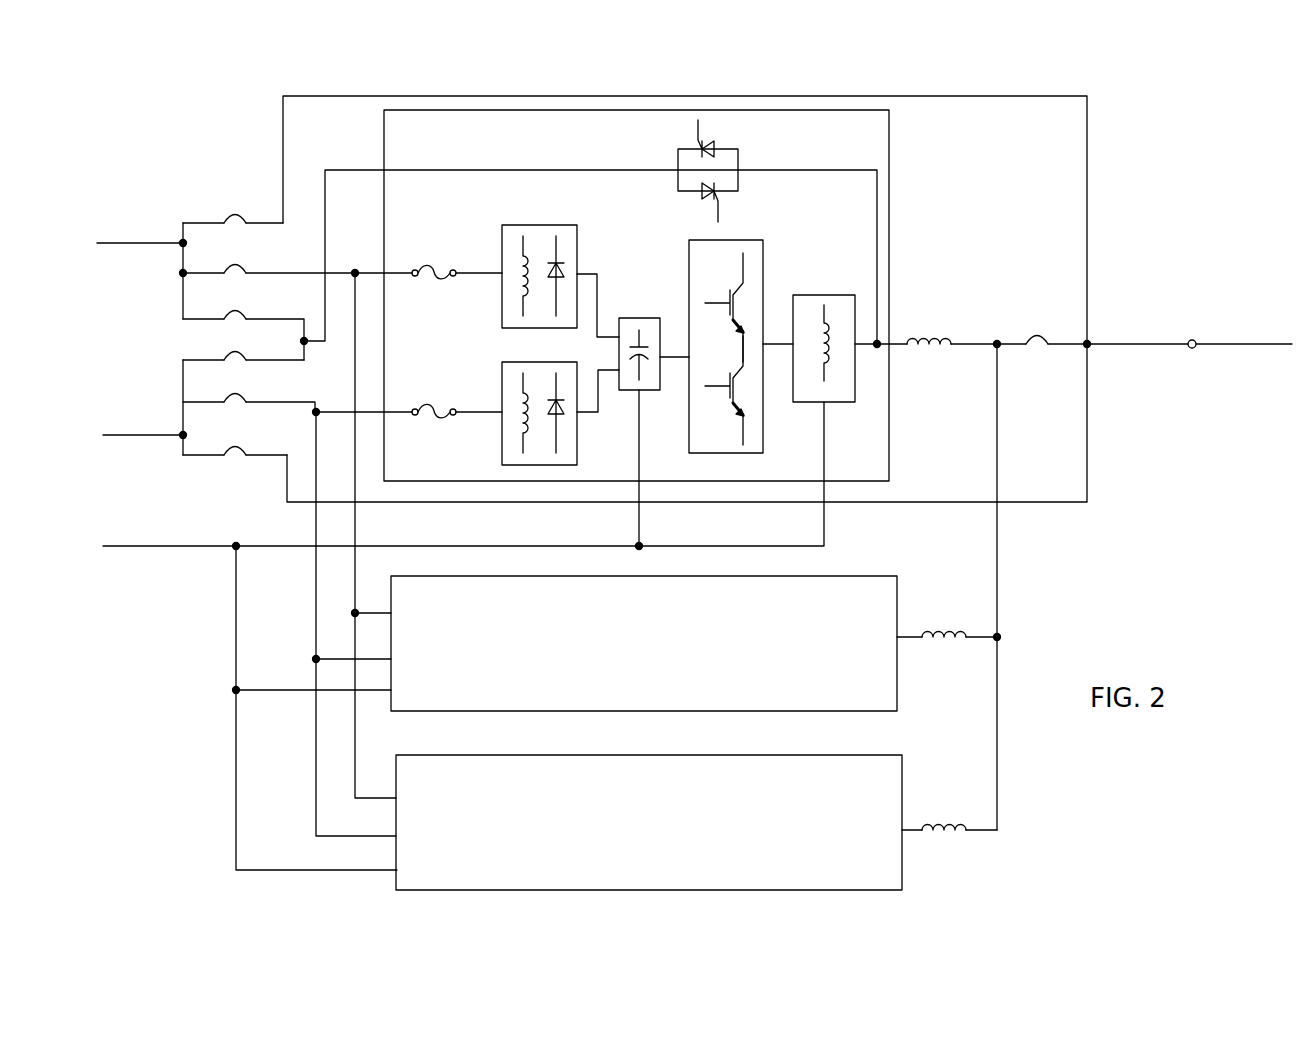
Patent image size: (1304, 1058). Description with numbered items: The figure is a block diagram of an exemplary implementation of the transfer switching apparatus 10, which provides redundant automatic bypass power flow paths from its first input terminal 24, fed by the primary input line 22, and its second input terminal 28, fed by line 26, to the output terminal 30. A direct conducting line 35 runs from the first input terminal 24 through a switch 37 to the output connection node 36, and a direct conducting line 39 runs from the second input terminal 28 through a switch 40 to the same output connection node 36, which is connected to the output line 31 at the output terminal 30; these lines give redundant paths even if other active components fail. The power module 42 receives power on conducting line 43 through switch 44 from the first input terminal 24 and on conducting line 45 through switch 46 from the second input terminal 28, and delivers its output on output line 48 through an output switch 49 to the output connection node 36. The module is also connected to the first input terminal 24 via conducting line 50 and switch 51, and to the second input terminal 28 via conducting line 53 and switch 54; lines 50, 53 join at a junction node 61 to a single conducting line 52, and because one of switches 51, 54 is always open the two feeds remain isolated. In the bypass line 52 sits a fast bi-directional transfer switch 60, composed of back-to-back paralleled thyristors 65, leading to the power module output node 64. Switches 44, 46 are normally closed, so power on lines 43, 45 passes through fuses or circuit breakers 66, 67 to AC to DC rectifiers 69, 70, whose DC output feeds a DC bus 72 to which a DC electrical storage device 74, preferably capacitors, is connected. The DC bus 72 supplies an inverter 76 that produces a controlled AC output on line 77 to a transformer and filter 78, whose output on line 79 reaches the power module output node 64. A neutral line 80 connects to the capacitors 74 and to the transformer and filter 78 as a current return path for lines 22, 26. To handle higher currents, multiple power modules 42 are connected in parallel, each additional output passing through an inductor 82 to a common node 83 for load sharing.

The transfer switching apparatus 10 is at (1148, 210).
The primary input line 22 is at (143, 240).
The first input terminal 24 is at (177, 262).
The second input line 26 is at (143, 432).
The second input terminal 28 is at (182, 445).
The output terminal 30 is at (1191, 340).
The output line 31 is at (1265, 343).
The direct conducting line 35 is at (373, 95).
The output connection node 36 is at (1089, 347).
The switch 37 is at (238, 212).
The direct conducting line 39 is at (497, 502).
The switch 40 is at (236, 463).
The power module 42 is at (889, 143).
The conducting line 43 is at (272, 270).
The switch 44 is at (232, 267).
The conducting line 45 is at (313, 465).
The switch 46 is at (234, 395).
The output line 48 is at (1003, 347).
The output switch 49 is at (1034, 340).
The conducting line 50 is at (266, 320).
The switch 51 is at (235, 312).
The conducting line 52 is at (361, 168).
The conducting line 53 is at (257, 362).
The switch 54 is at (232, 352).
The fast bi-directional transfer switch 60 is at (678, 158).
The junction node 61 is at (306, 344).
The power module output node 64 is at (879, 347).
The thyristors 65 is at (712, 158).
The fuse or circuit breaker 66 is at (437, 266).
The fuse or circuit breaker 67 is at (429, 405).
The AC to DC rectifier 69 is at (563, 224).
The AC to DC rectifier 70 is at (502, 443).
The DC bus 72 is at (598, 288).
The DC electrical storage device 74 is at (639, 317).
The inverter 76 is at (768, 260).
The line 77 is at (777, 346).
The transformer and filter 78 is at (808, 295).
The line 79 is at (866, 348).
The neutral line 80 is at (128, 552).
The inductor 82 is at (942, 335).
The common node 83 is at (997, 342).